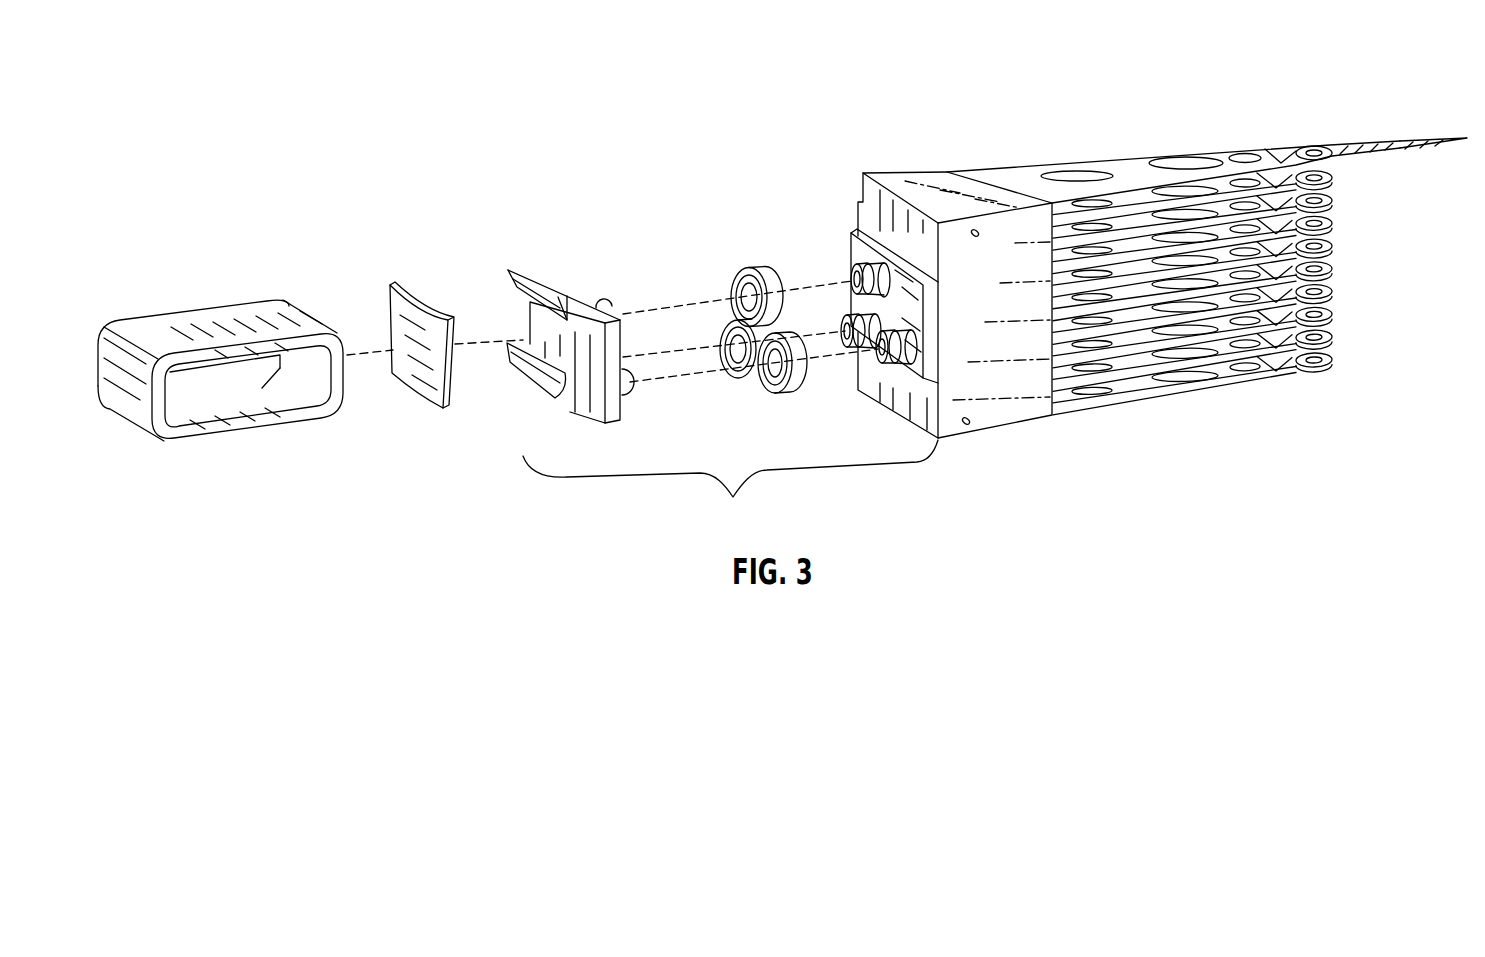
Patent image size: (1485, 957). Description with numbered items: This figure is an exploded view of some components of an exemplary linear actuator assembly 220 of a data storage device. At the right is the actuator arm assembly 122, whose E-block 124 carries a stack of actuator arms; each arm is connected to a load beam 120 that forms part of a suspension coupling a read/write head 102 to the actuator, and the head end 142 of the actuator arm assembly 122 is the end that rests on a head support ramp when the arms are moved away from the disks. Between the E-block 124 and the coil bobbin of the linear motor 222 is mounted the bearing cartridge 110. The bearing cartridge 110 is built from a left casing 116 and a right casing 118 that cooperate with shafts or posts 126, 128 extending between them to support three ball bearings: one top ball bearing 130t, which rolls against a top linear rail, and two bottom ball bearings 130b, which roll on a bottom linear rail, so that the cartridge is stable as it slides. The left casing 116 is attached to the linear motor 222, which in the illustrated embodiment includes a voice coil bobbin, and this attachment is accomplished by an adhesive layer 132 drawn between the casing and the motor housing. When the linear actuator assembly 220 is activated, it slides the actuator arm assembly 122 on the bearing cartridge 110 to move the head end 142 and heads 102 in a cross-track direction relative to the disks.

The head 102 is at (1458, 141).
The bearing cartridge 110 is at (730, 486).
The left casing 116 is at (547, 275).
The right casing 118 is at (912, 368).
The load beam 120 is at (1393, 143).
The actuator arm assembly 122 is at (1126, 144).
The E-block 124 is at (905, 174).
The shaft or post 126 is at (630, 280).
The shaft or post 128 is at (842, 327).
The top ball bearing 130t is at (764, 267).
The bottom ball bearings 130b is at (782, 390).
The adhesive layer 132 is at (405, 322).
The head end 142 is at (1466, 156).
The linear actuator assembly 220 is at (376, 70).
The linear motor 222 is at (198, 317).